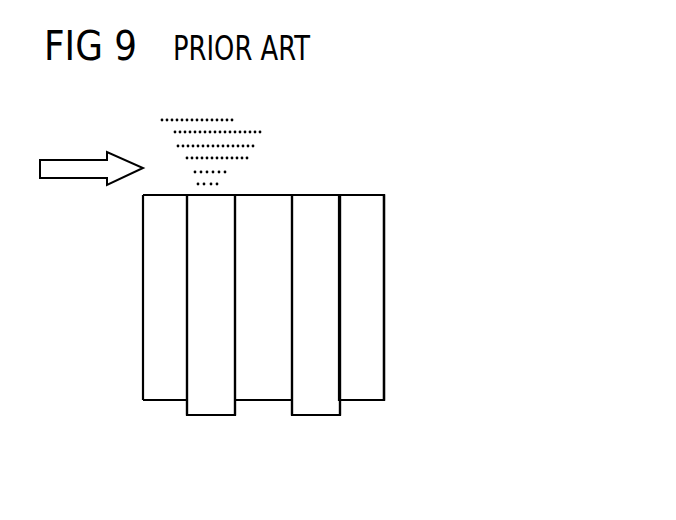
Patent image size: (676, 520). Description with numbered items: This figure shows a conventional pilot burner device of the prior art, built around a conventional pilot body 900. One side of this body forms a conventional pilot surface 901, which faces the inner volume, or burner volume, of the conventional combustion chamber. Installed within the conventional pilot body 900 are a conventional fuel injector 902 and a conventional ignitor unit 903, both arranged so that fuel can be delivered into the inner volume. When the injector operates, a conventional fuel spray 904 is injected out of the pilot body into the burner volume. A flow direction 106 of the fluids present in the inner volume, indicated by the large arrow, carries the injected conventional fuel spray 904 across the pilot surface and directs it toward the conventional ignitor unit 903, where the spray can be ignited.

The flow direction 106 is at (77, 170).
The conventional pilot body 900 is at (417, 300).
The conventional pilot surface 901 is at (356, 194).
The conventional fuel injector 902 is at (213, 405).
The conventional ignitor unit 903 is at (315, 405).
The conventional fuel spray 904 is at (248, 158).